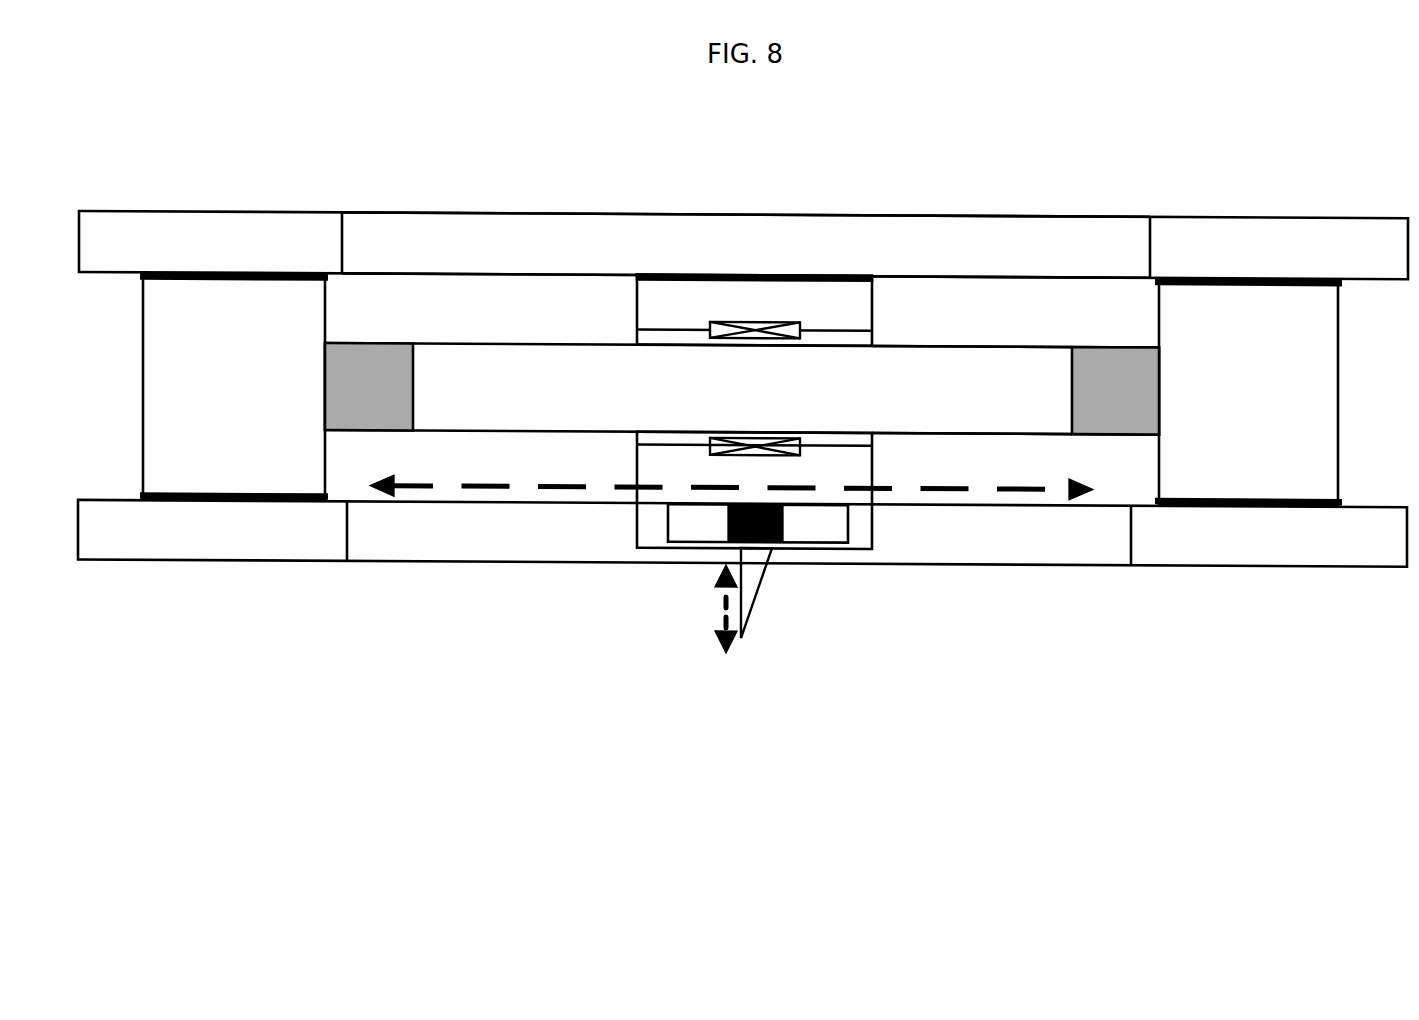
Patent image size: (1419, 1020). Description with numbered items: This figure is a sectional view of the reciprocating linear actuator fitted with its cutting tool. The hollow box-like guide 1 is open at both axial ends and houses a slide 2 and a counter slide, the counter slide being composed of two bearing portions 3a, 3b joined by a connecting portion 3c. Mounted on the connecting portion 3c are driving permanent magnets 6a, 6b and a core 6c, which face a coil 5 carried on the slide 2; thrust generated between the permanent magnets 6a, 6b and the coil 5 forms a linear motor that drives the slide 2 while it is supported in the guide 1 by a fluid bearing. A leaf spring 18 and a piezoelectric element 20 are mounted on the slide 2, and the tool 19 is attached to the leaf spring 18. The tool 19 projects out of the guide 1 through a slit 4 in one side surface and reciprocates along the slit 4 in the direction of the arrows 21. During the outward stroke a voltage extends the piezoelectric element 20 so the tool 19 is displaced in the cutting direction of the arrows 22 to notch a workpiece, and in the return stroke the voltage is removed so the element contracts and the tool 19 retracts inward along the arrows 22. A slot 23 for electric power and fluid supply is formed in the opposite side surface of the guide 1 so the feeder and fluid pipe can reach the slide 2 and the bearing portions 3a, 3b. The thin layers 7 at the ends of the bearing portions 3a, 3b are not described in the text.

The guide 1 is at (1165, 218).
The slide 2 is at (650, 307).
The bearing portion 3a is at (197, 328).
The bearing portion 3b is at (1291, 314).
The connecting portion 3c is at (471, 385).
The slit 4 is at (992, 533).
The coil 5 is at (775, 322).
The permanent magnet 6a is at (377, 376).
The permanent magnet 6b is at (1113, 380).
The core 6c is at (990, 376).
The elastic sheet 7 is at (237, 502).
The leaf spring 18 is at (815, 552).
The tool 19 is at (755, 598).
The piezoelectric element 20 is at (725, 522).
The arrows 21 is at (477, 500).
The arrows 22 is at (722, 622).
The slot 23 is at (905, 247).